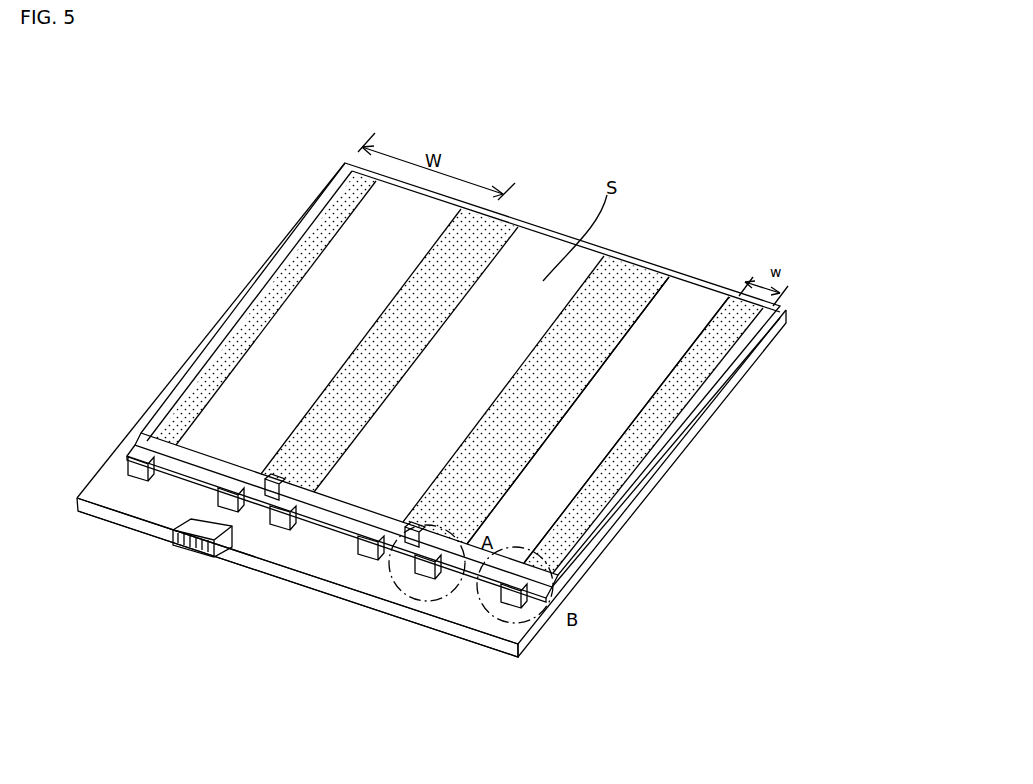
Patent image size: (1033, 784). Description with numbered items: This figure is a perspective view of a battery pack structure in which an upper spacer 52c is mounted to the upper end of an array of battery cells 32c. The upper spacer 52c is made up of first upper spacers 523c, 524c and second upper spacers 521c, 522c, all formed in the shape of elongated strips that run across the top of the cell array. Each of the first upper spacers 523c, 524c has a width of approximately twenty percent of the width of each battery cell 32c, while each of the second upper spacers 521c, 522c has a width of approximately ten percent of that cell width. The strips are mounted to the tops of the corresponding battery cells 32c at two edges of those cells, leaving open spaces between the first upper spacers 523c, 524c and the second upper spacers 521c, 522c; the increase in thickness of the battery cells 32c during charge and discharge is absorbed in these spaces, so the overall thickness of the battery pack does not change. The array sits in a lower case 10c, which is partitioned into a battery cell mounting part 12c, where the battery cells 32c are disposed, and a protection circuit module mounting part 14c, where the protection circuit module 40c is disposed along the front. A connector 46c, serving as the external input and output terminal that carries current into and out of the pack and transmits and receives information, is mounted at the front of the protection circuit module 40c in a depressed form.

The lower case 10c is at (76, 460).
The battery cell mounting part 12c is at (700, 430).
The protection circuit module mounting part 14c is at (495, 640).
The battery cells 32c is at (695, 320).
The protection circuit module 40c is at (336, 570).
The connector 46c is at (208, 550).
The upper spacer 52c is at (527, 192).
The second upper spacer 521c is at (716, 352).
The second upper spacer 522c is at (283, 271).
The first upper spacer 523c is at (617, 297).
The first upper spacer 524c is at (303, 453).